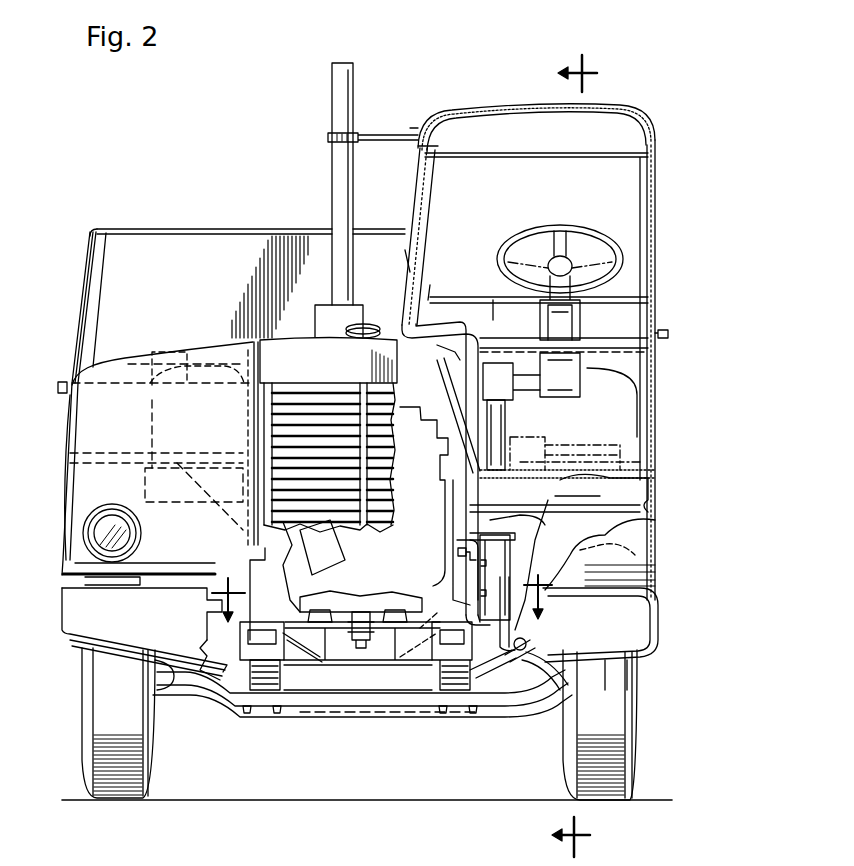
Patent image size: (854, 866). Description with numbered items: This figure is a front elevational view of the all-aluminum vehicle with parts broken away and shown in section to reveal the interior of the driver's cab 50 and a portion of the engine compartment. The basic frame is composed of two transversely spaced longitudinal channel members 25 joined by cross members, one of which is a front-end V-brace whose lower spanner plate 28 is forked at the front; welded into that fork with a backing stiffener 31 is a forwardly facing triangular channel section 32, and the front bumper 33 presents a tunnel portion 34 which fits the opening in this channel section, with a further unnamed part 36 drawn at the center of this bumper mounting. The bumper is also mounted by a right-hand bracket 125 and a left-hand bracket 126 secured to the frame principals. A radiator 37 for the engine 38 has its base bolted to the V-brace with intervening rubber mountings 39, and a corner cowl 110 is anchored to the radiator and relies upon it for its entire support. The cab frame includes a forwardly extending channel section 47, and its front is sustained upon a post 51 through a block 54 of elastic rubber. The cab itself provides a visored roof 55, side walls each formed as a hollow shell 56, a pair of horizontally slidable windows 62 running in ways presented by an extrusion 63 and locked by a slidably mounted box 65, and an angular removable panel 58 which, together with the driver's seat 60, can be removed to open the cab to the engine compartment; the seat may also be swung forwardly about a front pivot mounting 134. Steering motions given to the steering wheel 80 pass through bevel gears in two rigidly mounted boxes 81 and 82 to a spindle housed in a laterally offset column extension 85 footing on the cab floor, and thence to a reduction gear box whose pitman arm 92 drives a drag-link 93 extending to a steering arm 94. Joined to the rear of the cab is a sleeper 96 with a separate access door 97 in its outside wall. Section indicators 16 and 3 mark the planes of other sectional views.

The sleeper 96 is at (194, 238).
The access door 97 is at (98, 252).
The corner cowl 110 is at (84, 411).
The front bumper 33 is at (80, 609).
The radiator 37 is at (302, 345).
The engine 38 is at (412, 408).
The visored roof 55 is at (492, 108).
The driver's cab 50 is at (668, 182).
The windows 62 is at (420, 196).
The hollow shell 56 is at (403, 320).
The extrusion 63 is at (410, 284).
The slidably mounted box 65 is at (433, 285).
The driver's seat 60 is at (500, 294).
The removable panel 58 is at (453, 358).
The steering wheel 80 is at (560, 232).
The gear box 81 is at (562, 395).
The gear box 82 is at (500, 392).
The column extension 85 is at (496, 423).
The front pivot mounting 134 is at (530, 450).
The channel section 47 is at (565, 462).
The rubber block 54 is at (560, 514).
The post 51 is at (540, 528).
The right-hand bracket 125 is at (248, 628).
The lower spanner plate 28 is at (310, 650).
The triangular channel section 32 is at (310, 665).
The tunnel portion 34 is at (340, 665).
The bolt 36 is at (375, 665).
The left-hand bracket 126 is at (437, 660).
The rubber mountings 39 is at (388, 610).
The backing stiffener 31 is at (420, 620).
The longitudinal channel members 25 is at (272, 548).
The pitman arm 92 is at (509, 626).
The drag-link 93 is at (540, 648).
The steering arm 94 is at (548, 690).
The section line 16 is at (383, 587).
The section line 3 is at (585, 456).